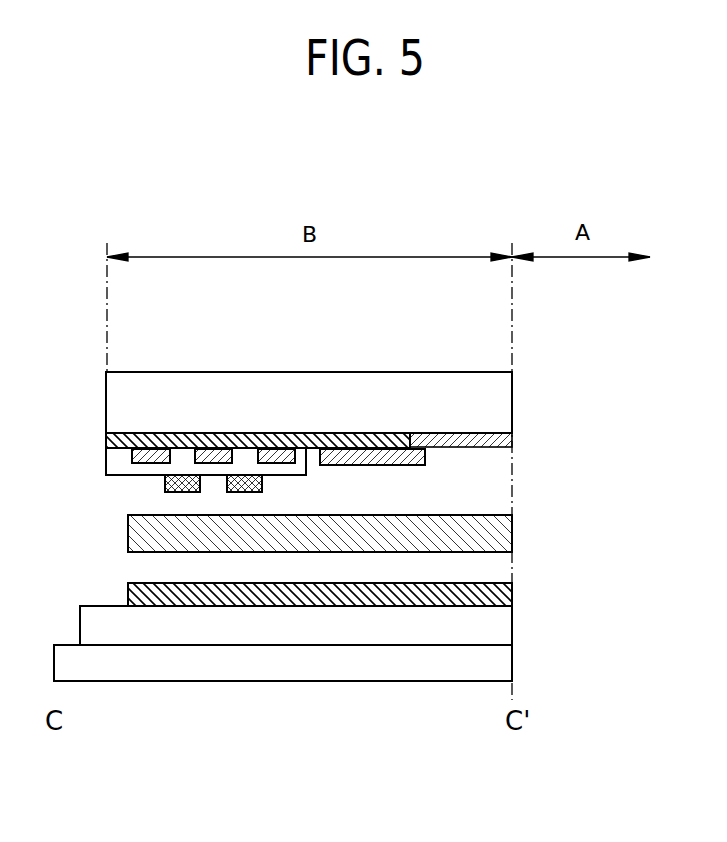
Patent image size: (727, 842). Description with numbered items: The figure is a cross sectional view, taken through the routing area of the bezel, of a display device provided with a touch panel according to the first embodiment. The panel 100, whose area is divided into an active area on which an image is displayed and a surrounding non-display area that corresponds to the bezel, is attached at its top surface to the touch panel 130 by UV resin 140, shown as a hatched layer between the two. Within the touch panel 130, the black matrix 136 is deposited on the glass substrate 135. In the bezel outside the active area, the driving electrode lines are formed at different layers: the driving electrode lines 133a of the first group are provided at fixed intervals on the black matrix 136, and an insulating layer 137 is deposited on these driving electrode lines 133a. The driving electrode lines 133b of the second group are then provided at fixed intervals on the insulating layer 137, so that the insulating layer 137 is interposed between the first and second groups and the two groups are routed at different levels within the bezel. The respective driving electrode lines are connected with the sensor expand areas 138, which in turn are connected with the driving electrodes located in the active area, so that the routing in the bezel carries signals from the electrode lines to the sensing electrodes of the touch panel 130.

The touch panel 130 is at (384, 320).
The glass substrate 135 is at (137, 410).
The black matrix 136 is at (178, 441).
The driving electrode lines of the first group 133a is at (217, 457).
The driving electrode lines of the second group 133b is at (263, 473).
The insulating layer 137 is at (298, 465).
The sensor expand area 138 is at (376, 460).
The UV resin 140 is at (480, 537).
The panel 100 is at (522, 583).